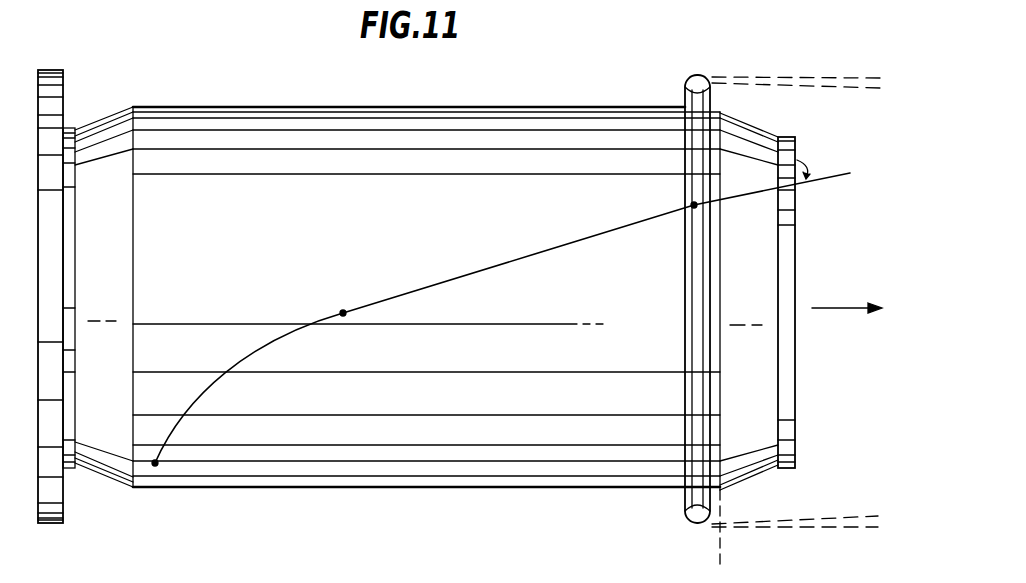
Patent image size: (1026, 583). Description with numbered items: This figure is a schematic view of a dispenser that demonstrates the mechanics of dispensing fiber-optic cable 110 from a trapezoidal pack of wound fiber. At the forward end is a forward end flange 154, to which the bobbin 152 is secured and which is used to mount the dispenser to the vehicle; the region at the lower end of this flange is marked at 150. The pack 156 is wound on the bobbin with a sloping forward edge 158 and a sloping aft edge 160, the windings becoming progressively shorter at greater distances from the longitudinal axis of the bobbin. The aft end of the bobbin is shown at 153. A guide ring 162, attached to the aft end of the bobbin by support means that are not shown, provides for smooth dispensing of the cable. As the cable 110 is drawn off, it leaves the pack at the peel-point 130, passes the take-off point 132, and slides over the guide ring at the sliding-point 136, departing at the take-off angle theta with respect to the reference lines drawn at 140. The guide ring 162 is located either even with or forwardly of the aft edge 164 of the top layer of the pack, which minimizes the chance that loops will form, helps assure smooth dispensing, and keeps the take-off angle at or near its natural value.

The fiber-optic cable 110 is at (829, 173).
The peel-point 130 is at (158, 466).
The take-off point 132 is at (343, 313).
The sliding-point 136 is at (694, 208).
The reference plane 140 is at (769, 77).
The flange end 150 is at (33, 521).
The bobbin 152 is at (69, 130).
The aft end of the bobbin 153 is at (797, 420).
The forward end flange 154 is at (40, 118).
The pack 156 is at (485, 107).
The forward edge 158 is at (103, 470).
The aft edge 160 is at (760, 478).
The guide ring 162 is at (685, 84).
The aft edge of the top layer of the pack 164 is at (722, 540).